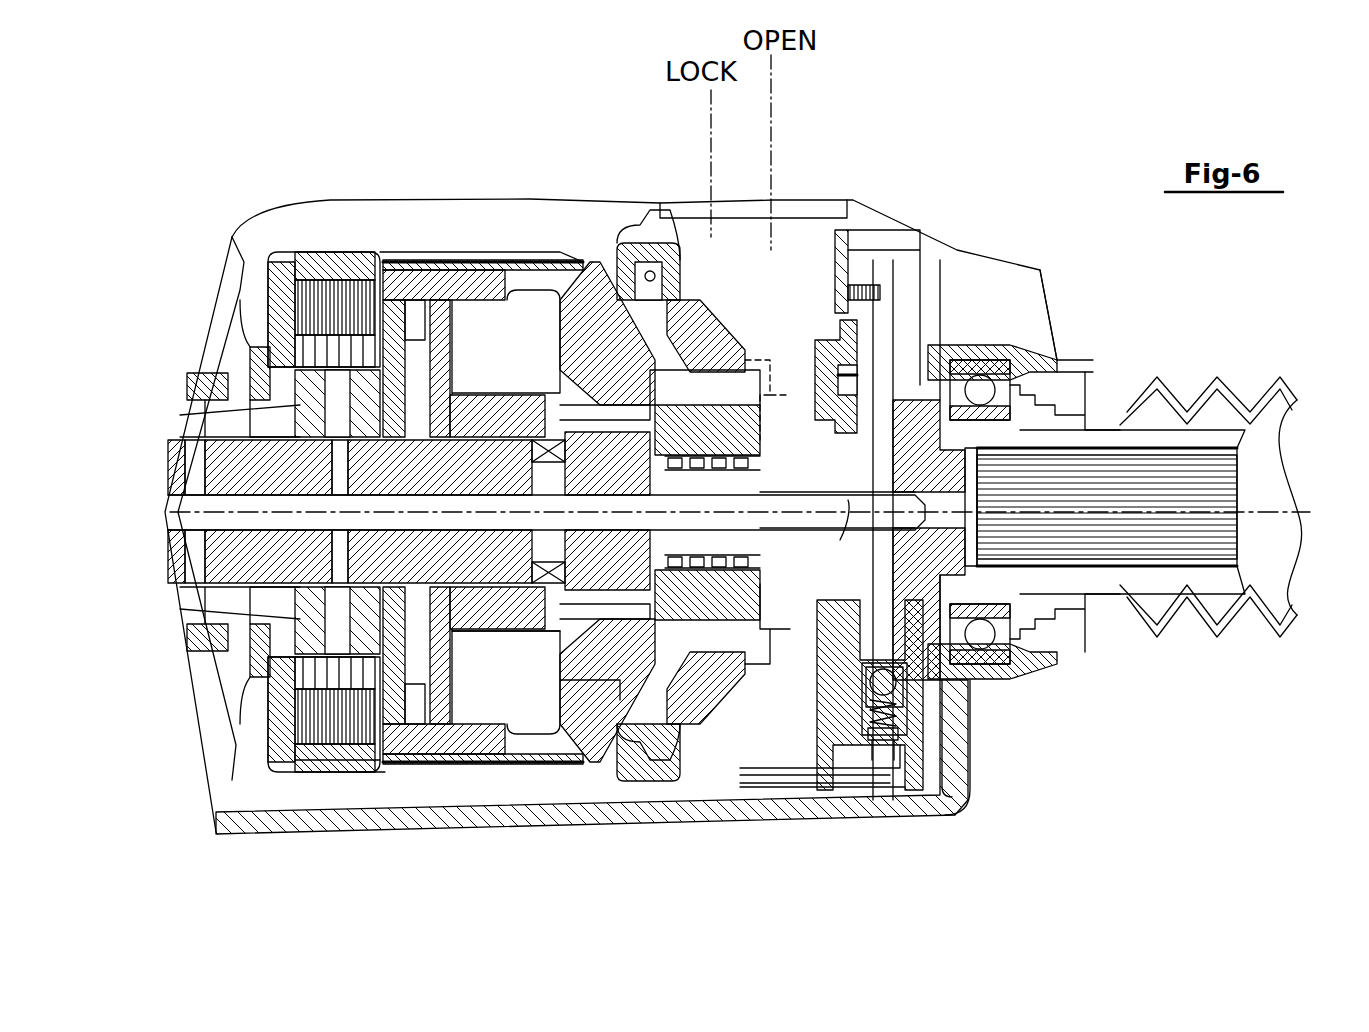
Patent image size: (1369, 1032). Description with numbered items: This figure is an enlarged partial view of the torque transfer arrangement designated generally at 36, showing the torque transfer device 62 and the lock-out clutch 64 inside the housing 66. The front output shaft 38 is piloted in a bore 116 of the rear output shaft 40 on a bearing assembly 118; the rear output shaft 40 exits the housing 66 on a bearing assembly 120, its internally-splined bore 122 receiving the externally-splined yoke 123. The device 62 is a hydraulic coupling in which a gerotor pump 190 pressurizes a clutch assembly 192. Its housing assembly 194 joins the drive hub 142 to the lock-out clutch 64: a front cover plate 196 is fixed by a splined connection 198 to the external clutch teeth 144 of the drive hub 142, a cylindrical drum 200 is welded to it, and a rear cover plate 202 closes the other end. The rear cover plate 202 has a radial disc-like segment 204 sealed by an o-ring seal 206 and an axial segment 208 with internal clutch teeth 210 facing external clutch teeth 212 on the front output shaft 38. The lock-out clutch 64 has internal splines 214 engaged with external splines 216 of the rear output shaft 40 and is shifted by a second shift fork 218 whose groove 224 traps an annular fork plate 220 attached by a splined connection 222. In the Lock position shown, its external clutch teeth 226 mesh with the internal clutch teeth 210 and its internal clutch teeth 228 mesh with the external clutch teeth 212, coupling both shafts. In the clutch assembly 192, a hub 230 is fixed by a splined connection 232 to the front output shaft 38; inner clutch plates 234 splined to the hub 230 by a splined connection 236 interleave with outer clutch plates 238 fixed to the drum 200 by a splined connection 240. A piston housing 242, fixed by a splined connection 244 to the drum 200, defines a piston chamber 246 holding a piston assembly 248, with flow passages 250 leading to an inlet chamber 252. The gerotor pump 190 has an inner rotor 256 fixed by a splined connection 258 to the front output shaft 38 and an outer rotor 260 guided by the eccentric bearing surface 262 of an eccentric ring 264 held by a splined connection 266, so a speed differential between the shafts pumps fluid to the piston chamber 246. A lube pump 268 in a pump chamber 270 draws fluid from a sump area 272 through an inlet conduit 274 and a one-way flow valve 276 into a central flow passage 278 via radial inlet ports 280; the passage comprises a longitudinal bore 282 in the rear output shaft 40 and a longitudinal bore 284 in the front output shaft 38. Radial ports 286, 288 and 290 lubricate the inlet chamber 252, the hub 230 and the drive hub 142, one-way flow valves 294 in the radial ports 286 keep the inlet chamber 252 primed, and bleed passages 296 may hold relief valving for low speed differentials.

The electric actuator assembly 36 is at (880, 160).
The front output shaft 38 is at (178, 552).
The rear output shaft 40 is at (1148, 440).
The torque transfer device 62 is at (444, 240).
The lock-out clutch 64 is at (758, 352).
The housing 66 is at (262, 826).
The bore 116 is at (779, 560).
The bearing assembly 118 is at (752, 462).
The bearing assembly 120 is at (1000, 360).
The internally-splined bore 122 is at (1210, 545).
The externally-splined yoke 123 is at (1255, 470).
The drive hub 142 is at (190, 415).
The external clutch teeth 144 is at (205, 378).
The gerotor pump 190 is at (470, 320).
The clutch assembly 192 is at (332, 278).
The housing assembly 194 is at (290, 760).
The front cover plate 196 is at (290, 718).
The splined connection 198 is at (300, 630).
The cylindrical drum 200 is at (372, 766).
The rear cover plate 202 is at (540, 762).
The radial disc-like segment 204 is at (575, 740).
The o-ring seal 206 is at (607, 460).
The axial segment 208 is at (640, 690).
The internal clutch teeth 210 is at (640, 400).
The external clutch teeth 212 is at (575, 718).
The internal splines 214 is at (750, 410).
The external splines 216 is at (800, 600).
The second shift fork 218 is at (648, 228).
The annular fork plate 220 is at (688, 722).
The splined connection 222 is at (740, 665).
The groove 224 is at (656, 278).
The external clutch teeth 226 is at (650, 740).
The internal clutch teeth 228 is at (665, 408).
The hub 230 is at (290, 690).
The splined connection 232 is at (300, 660).
The inner clutch plates 234 is at (296, 372).
The splined connection 236 is at (262, 385).
The outer clutch plates 238 is at (390, 302).
The splined connection 240 is at (300, 256).
The piston housing 242 is at (438, 760).
The splined connection 244 is at (388, 760).
The piston chamber 246 is at (412, 762).
The piston assembly 248 is at (412, 300).
The flow passages 250 is at (440, 320).
The inlet chamber 252 is at (503, 660).
The inner rotor 256 is at (528, 598).
The splined connection 258 is at (350, 467).
The outer rotor 260 is at (498, 382).
The eccentric bearing surface 262 is at (478, 262).
The eccentric ring 264 is at (490, 740).
The splined connection 266 is at (452, 758).
The lube pump 268 is at (845, 345).
The pump chamber 270 is at (505, 340).
The sump area 272 is at (812, 762).
The inlet conduit 274 is at (830, 782).
The one-way flow valve 276 is at (900, 735).
The central flow passage 278 is at (850, 520).
The radial inlet ports 280 is at (903, 448).
The longitudinal bore 282 is at (861, 492).
The longitudinal bore 284 is at (176, 512).
The radial ports 286 is at (550, 468).
The radial ports 288 is at (335, 550).
The radial ports 290 is at (176, 468).
The one-way flow valves 294 is at (552, 452).
The bleed passages 296 is at (498, 702).